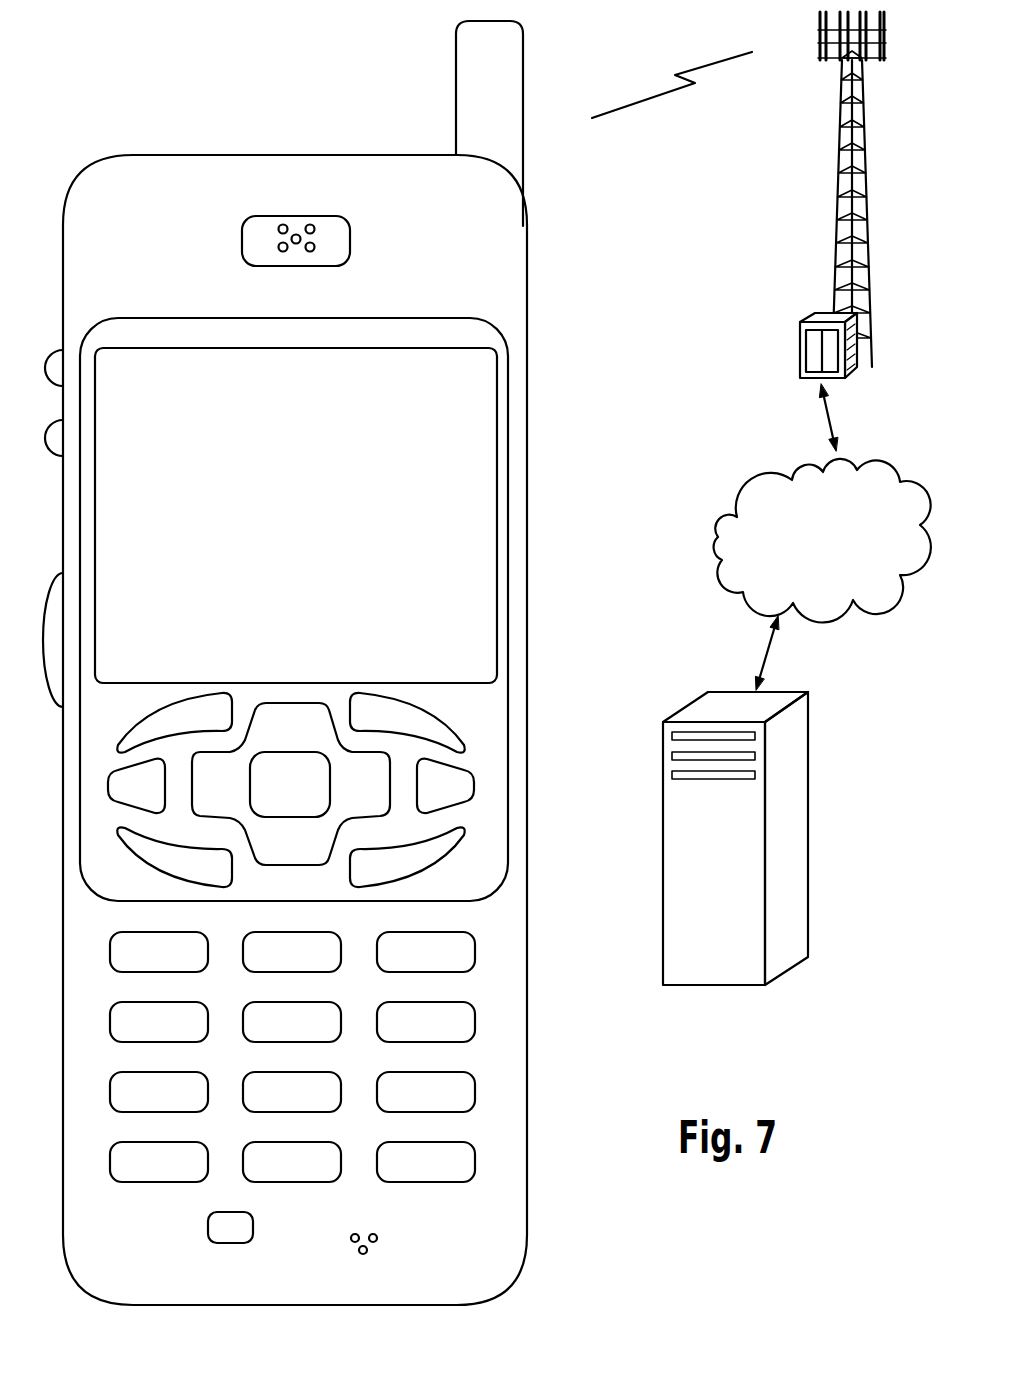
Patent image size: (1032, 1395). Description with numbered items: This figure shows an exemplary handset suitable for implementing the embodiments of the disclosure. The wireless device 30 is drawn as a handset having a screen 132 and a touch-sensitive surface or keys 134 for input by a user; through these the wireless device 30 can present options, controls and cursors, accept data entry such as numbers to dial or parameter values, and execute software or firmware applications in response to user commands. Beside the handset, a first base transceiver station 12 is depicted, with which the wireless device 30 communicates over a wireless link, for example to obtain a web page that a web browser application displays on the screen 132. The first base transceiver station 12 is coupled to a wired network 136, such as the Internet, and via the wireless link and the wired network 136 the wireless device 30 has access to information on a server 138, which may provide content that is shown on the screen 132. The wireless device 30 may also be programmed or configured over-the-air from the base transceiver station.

The wireless device 30 is at (324, 679).
The screen 132 is at (500, 363).
The keys 134 is at (538, 692).
The first base transceiver station 12 is at (836, 210).
The wired network 136 is at (733, 590).
The server 138 is at (714, 986).